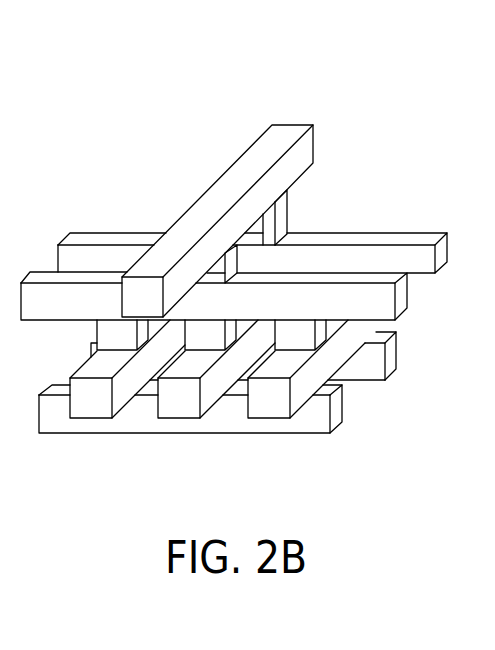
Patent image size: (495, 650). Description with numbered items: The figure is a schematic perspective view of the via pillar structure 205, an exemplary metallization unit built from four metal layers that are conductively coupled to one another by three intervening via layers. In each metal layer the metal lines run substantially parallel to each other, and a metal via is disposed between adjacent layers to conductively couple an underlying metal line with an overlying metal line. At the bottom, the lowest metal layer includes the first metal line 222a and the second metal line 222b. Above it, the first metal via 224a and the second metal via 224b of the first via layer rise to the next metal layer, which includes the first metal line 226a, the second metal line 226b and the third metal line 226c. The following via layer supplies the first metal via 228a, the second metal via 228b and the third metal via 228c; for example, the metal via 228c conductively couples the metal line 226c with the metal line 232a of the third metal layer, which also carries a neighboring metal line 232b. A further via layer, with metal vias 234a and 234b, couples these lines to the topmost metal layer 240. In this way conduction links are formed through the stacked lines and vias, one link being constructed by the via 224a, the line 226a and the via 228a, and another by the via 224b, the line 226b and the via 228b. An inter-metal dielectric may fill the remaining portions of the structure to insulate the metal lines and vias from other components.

The via pillar structure 205 is at (434, 87).
The first metal line 222a is at (338, 407).
The second metal line 222b is at (388, 353).
The first metal via 224a is at (138, 397).
The second metal via 224b is at (234, 387).
The first metal line 226a is at (90, 407).
The second metal line 226b is at (179, 407).
The third metal line 226c is at (267, 407).
The first metal via 228a is at (108, 334).
The second metal via 228b is at (206, 340).
The third metal via 228c is at (297, 336).
The metal line 232a is at (77, 280).
The third conductive line 232b is at (142, 240).
The via 234a is at (232, 264).
The via 234b is at (278, 215).
The metal layer 240 is at (288, 133).